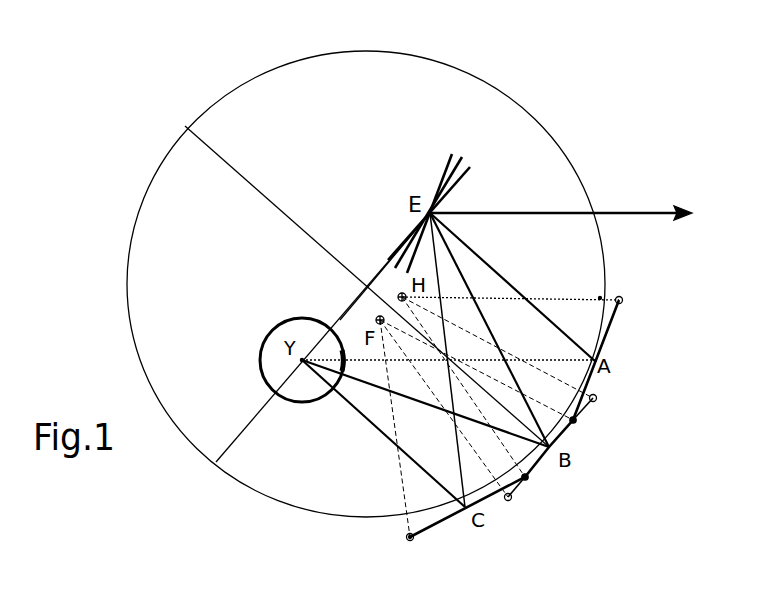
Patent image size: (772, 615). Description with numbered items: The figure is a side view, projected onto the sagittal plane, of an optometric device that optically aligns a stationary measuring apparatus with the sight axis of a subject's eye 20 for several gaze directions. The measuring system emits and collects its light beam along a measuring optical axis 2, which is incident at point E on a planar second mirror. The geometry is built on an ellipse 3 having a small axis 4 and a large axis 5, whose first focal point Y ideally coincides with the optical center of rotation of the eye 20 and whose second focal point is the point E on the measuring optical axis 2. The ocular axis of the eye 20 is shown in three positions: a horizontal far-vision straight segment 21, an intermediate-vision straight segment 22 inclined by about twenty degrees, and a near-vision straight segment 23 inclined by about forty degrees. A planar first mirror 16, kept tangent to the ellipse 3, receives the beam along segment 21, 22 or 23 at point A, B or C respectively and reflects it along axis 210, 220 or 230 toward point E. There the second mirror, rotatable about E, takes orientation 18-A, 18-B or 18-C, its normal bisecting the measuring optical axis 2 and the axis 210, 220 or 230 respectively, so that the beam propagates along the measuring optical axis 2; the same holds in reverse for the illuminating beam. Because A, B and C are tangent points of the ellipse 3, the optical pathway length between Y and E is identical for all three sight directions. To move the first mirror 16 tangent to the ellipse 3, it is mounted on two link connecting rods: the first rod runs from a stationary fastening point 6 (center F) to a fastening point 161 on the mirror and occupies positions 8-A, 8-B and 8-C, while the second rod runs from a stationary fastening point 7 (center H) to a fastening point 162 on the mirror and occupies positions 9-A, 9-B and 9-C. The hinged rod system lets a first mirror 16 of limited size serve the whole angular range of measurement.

The measuring optical axis 2 is at (611, 212).
The ellipse 3 is at (276, 66).
The small axis 4 is at (200, 136).
The large axis 5 is at (233, 454).
The link connecting rod fastening point 6 is at (360, 280).
The link connecting rod fastening point 7 is at (396, 290).
The first mirror 16 is at (610, 328).
The link connecting rod fastening point 161 is at (410, 541).
The link connecting rod fastening point 162 is at (625, 300).
The orientation of second mirror 18-A is at (450, 156).
The orientation of second mirror 18-B is at (462, 158).
The orientation of second mirror 18-C is at (467, 177).
The eye 20 is at (260, 358).
The straight segment 21 is at (356, 352).
The straight segment 22 is at (340, 400).
The straight segment 23 is at (366, 418).
The axis 210 is at (486, 260).
The axis 220 is at (482, 308).
The axis 230 is at (454, 476).
The position of first link connecting rod 8-A is at (577, 422).
The position of first link connecting rod 8-B is at (484, 504).
The position of first link connecting rod 8-C is at (406, 539).
The position of second link connecting rod 9-A is at (582, 298).
The position of second link connecting rod 9-B is at (591, 394).
The position of second link connecting rod 9-C is at (512, 497).